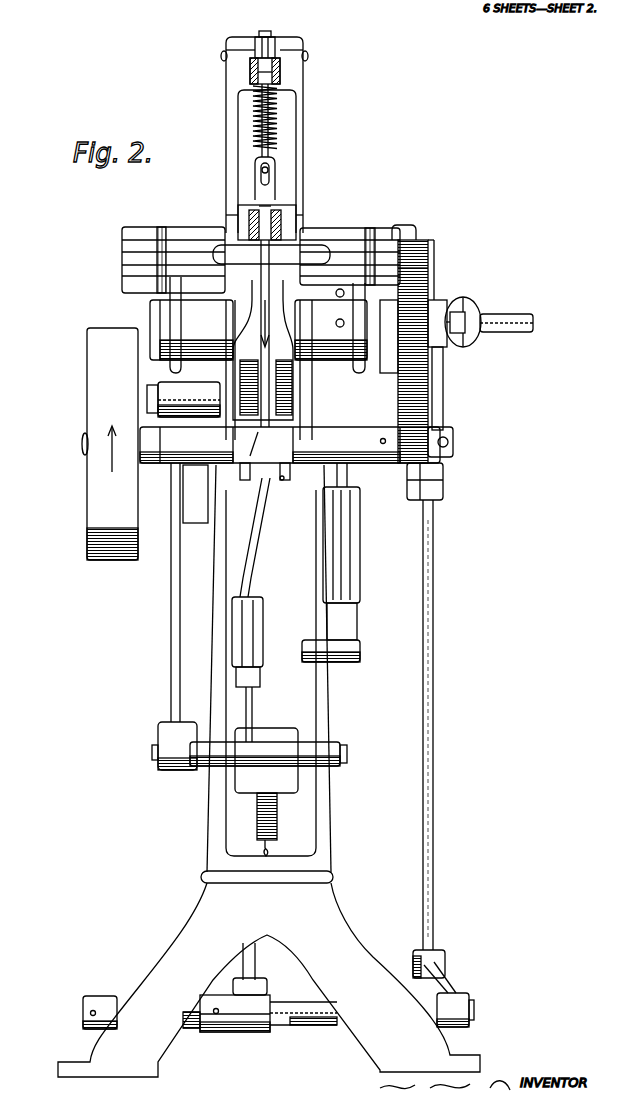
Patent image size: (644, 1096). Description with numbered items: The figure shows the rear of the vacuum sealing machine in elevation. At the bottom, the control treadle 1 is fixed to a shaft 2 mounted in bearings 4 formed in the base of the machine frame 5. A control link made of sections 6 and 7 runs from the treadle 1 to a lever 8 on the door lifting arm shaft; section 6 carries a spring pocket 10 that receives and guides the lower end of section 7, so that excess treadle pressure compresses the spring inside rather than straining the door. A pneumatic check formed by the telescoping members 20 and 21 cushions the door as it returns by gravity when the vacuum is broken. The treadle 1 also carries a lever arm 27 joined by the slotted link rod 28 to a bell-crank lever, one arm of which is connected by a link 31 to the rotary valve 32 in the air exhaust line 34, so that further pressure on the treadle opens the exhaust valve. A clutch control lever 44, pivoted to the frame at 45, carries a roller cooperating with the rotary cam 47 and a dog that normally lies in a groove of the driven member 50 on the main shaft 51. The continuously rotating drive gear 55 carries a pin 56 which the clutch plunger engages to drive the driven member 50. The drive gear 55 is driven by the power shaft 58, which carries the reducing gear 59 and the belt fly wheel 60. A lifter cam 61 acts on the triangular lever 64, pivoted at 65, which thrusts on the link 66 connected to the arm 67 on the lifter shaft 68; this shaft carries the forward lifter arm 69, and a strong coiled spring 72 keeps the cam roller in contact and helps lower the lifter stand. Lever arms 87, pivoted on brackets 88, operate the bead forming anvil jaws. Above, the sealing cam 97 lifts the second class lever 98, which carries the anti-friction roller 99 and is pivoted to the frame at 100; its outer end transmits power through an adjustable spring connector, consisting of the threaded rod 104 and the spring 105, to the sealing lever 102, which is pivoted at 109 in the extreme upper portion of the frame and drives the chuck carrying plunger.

The control treadle 1 is at (243, 1032).
The shaft 2 is at (313, 1025).
The bearings 4 is at (108, 997).
The machine frame 5 is at (200, 913).
The link section 6 is at (252, 706).
The link section 7 is at (257, 545).
The lever 8 is at (278, 465).
The spring pocket 10 is at (263, 631).
The telescoping member 20 is at (359, 561).
The telescoping member 21 is at (357, 621).
The lever arm 27 is at (445, 983).
The slotted link rod 28 is at (434, 876).
The link 31 is at (443, 411).
The rotary valve 32 is at (468, 302).
The air exhaust line 34 is at (508, 321).
The clutch control lever 44 is at (410, 229).
The pivot 45 is at (432, 248).
The rotary cam 47 is at (420, 270).
The driven member 50 is at (418, 363).
The main shaft 51 is at (150, 328).
The drive gear 55 is at (420, 391).
The pin 56 is at (428, 300).
The power shaft 58 is at (82, 445).
The reducing gear 59 is at (443, 467).
The belt fly wheel 60 is at (88, 381).
The lifter cam 61 is at (170, 295).
The triangular lever 64 is at (150, 400).
The pivot 65 is at (150, 388).
The link 66 is at (170, 664).
The arm 67 is at (178, 770).
The lifter shaft 68 is at (158, 751).
The forward lifter arm 69 is at (287, 742).
The coiled spring 72 is at (277, 827).
The lever arms 87 is at (161, 252).
The brackets 88 is at (190, 235).
The sealing cam 97 is at (262, 440).
The second class lever 98 is at (258, 198).
The anti-friction roller 99 is at (285, 206).
The pivot 100 is at (226, 216).
The sealing lever 102 is at (283, 70).
The threaded rod 104 is at (265, 37).
The spring 105 is at (254, 110).
The pivot 109 is at (224, 56).